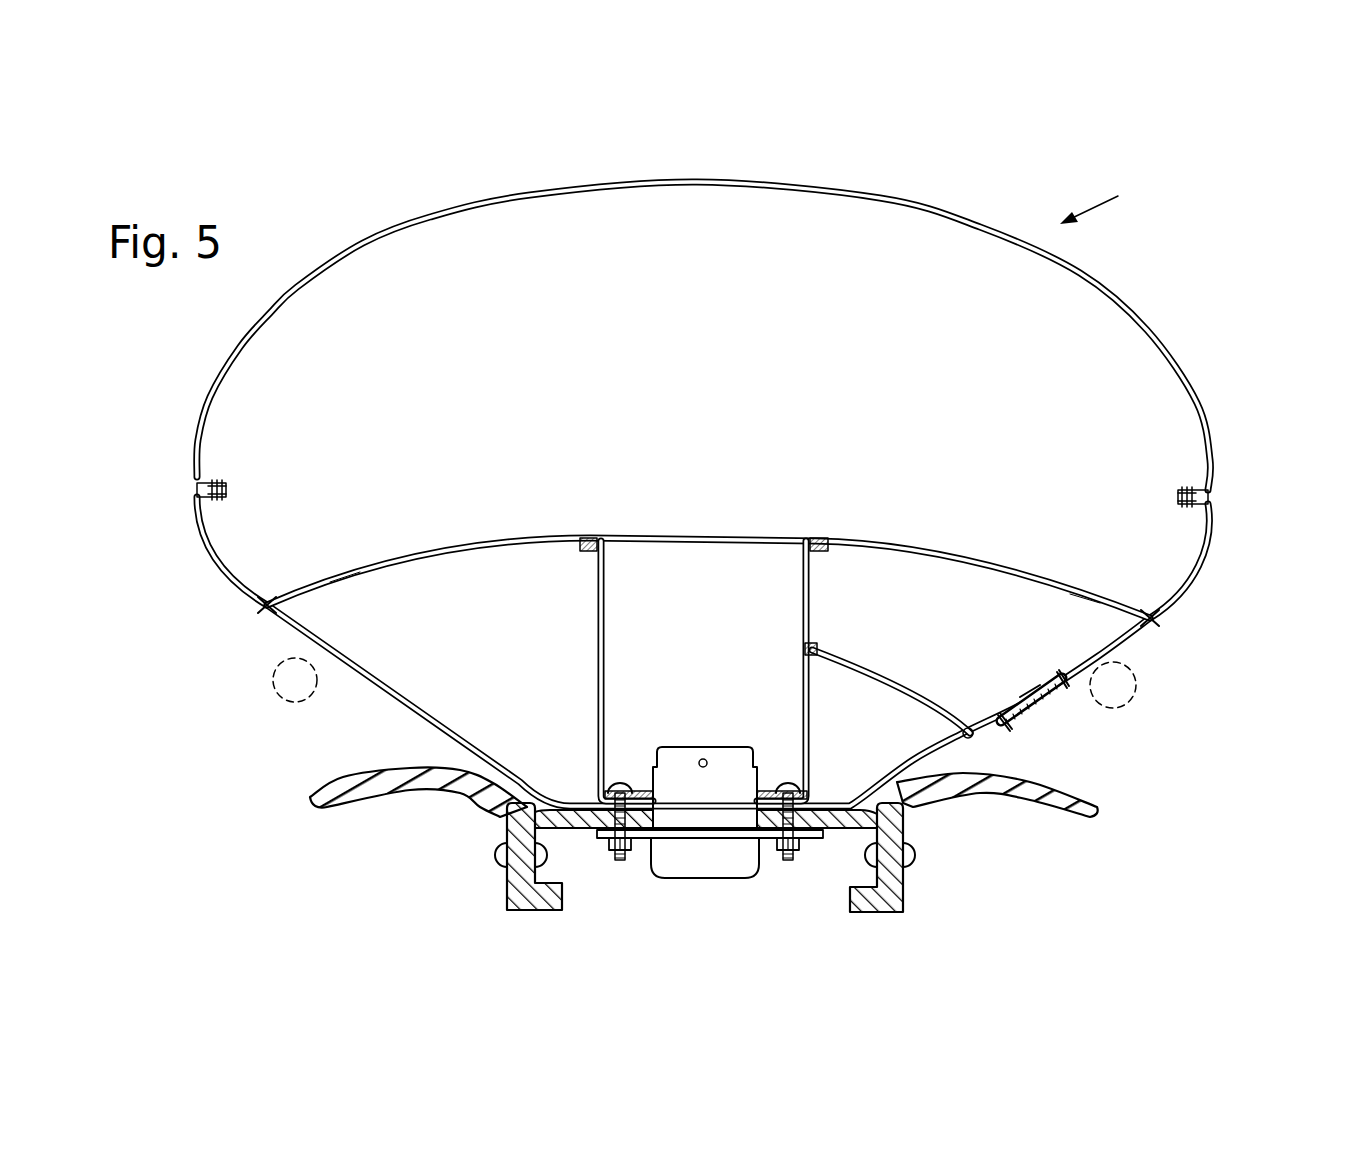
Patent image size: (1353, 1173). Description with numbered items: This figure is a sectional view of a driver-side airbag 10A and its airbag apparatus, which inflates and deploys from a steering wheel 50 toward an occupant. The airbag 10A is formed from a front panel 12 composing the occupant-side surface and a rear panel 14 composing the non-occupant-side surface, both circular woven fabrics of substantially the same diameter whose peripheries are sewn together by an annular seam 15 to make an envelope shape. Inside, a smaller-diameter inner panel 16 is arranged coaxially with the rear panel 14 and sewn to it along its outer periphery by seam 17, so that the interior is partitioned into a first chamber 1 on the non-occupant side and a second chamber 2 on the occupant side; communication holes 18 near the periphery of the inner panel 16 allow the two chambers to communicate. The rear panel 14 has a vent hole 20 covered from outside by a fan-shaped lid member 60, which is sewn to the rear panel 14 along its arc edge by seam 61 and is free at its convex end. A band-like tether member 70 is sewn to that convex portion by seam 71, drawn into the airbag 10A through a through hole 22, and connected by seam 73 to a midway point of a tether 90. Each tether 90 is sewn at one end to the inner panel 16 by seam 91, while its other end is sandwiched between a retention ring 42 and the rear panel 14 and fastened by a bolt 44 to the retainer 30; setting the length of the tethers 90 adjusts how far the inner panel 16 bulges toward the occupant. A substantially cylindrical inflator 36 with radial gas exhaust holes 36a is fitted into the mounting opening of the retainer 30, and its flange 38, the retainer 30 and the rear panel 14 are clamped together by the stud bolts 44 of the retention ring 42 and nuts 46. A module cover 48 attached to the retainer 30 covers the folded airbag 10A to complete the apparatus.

The airbag 10A is at (1160, 205).
The front panel 12 is at (690, 185).
The rear panel 14 is at (395, 700).
The seam 15 is at (222, 487).
The inner panel 16 is at (566, 535).
The seam 17 is at (260, 612).
The communication hole 18 is at (345, 577).
The first chamber 1 is at (512, 655).
The second chamber 2 is at (544, 366).
The vent hole 20 is at (1030, 697).
The through hole 22 is at (972, 727).
The retainer 30 is at (902, 830).
The inflator 36 is at (689, 813).
The gas exhaust hole 36a is at (695, 748).
The flange 38 is at (665, 838).
The retention ring 42 is at (775, 793).
The stud bolt 44 is at (622, 866).
The nut 46 is at (605, 843).
The module cover 48 is at (311, 800).
The steering wheel 50 is at (278, 688).
The lid member 60 is at (1045, 703).
The seam 61 is at (1063, 680).
The tether member 70 is at (890, 690).
The seam 71 is at (1008, 727).
The seam 73 is at (810, 650).
The tether 90 is at (600, 577).
The seam 91 is at (592, 540).